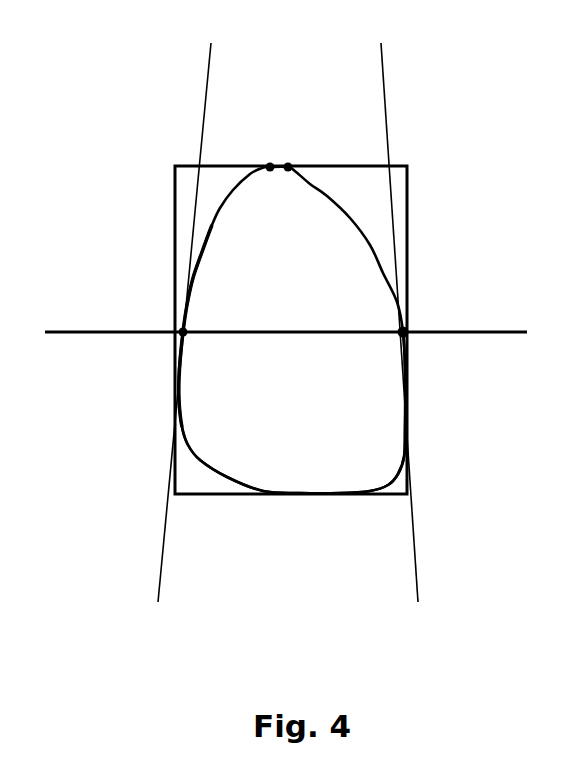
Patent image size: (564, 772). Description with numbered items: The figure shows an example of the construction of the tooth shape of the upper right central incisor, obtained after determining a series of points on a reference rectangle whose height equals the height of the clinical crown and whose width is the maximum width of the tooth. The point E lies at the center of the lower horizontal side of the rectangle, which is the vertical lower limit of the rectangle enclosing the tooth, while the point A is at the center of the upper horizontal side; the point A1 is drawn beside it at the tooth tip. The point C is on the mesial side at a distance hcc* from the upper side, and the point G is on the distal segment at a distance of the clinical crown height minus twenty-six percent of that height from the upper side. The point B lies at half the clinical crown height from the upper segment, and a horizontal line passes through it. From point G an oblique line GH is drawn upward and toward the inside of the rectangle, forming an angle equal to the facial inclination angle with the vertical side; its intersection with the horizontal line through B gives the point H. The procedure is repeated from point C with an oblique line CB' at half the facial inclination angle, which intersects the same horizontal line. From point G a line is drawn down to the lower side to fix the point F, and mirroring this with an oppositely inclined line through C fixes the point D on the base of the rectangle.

The oblique line GH is at (213, 322).
The oblique line CB' is at (414, 319).
The point A1 on tooth tip A1 is at (267, 154).
The point A is at (299, 154).
The point H is at (198, 319).
The point B is at (416, 318).
The point G is at (186, 379).
The point F is at (204, 456).
The point E is at (298, 498).
The point D is at (387, 474).
The point C is at (413, 395).